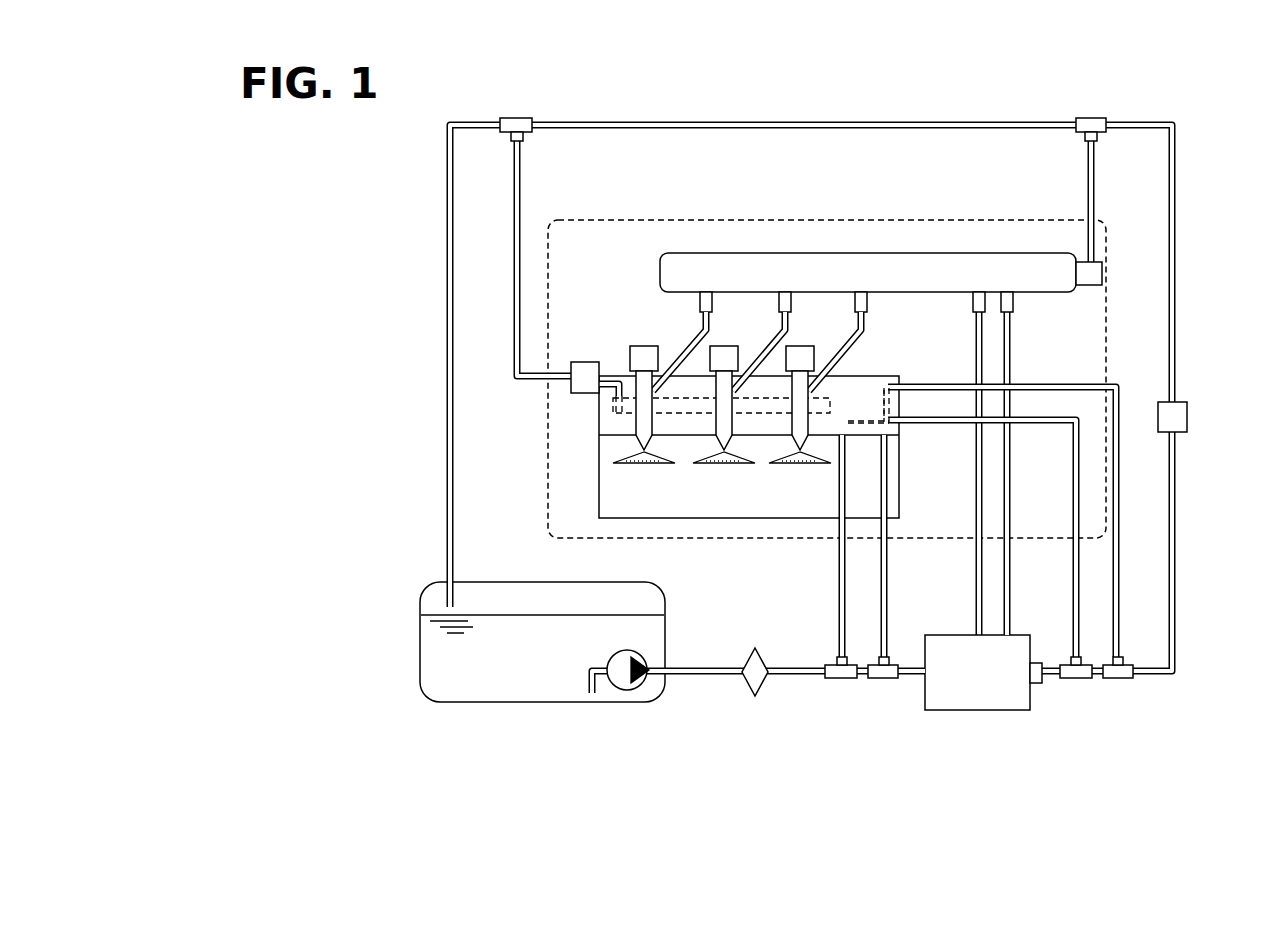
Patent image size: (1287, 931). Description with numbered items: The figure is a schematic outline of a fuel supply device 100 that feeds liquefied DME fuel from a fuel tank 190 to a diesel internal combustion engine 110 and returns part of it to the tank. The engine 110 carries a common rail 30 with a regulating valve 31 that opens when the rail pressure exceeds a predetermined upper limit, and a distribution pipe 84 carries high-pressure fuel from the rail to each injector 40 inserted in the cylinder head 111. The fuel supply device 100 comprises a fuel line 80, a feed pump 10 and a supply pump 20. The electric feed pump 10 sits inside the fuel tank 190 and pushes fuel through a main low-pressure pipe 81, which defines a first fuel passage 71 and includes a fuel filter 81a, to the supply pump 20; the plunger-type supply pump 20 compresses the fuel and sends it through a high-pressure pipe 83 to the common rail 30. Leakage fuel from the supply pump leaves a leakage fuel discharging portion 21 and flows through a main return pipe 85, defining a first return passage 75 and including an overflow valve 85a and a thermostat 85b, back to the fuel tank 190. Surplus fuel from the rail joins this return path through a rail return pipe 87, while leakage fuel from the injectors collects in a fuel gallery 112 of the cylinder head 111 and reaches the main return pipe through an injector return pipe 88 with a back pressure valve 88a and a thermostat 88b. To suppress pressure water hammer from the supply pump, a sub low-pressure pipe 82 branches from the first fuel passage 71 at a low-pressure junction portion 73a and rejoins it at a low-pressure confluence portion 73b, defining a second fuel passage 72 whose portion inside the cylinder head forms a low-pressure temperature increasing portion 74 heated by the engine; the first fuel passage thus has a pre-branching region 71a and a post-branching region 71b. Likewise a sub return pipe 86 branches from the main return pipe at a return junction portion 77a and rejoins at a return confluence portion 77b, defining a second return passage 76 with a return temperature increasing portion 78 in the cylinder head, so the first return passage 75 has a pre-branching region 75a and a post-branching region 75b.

The feed pump 10 is at (610, 660).
The supply pump 20 is at (975, 712).
The leakage fuel discharging portion 21 is at (1038, 685).
The common rail 30 is at (944, 253).
The regulating valve 31 is at (1090, 287).
The injector 40 is at (646, 339).
The first fuel passage 71 is at (790, 665).
The pre-branching region 71a is at (908, 679).
The post-branching region 71b is at (860, 665).
The second fuel passage 72 is at (837, 600).
The low-pressure junction portion 73a is at (877, 680).
The low-pressure confluence portion 73b is at (838, 680).
The low-pressure temperature increasing portion 74 is at (872, 425).
The first return passage 75 is at (1145, 665).
The pre-branching region 75a is at (1050, 665).
The post-branching region 75b is at (1095, 665).
The second return passage 76 is at (1073, 557).
The return junction portion 77a is at (1078, 680).
The return confluence portion 77b is at (1115, 680).
The return temperature increasing portion 78 is at (886, 398).
The fuel line 80 is at (1196, 146).
The main low-pressure pipe 81 is at (808, 676).
The fuel filter 81a is at (755, 697).
The sub low-pressure pipe 82 is at (888, 586).
The high-pressure pipe 83 is at (1011, 586).
The distribution pipe 84 is at (703, 325).
The main return pipe 85 is at (1176, 590).
The overflow valve 85a is at (1218, 394).
The thermostat 85b is at (1188, 402).
The sub return pipe 86 is at (1125, 121).
The rail return pipe 87 is at (1095, 175).
The injector return pipe 88 is at (521, 177).
The back pressure valve 88a is at (588, 354).
The thermostat 88b is at (585, 362).
The fuel supply device 100 is at (663, 738).
The internal combustion engine 110 is at (1008, 220).
The cylinder head 111 is at (597, 407).
The fuel gallery 112 is at (613, 414).
The fuel tank 190 is at (650, 582).